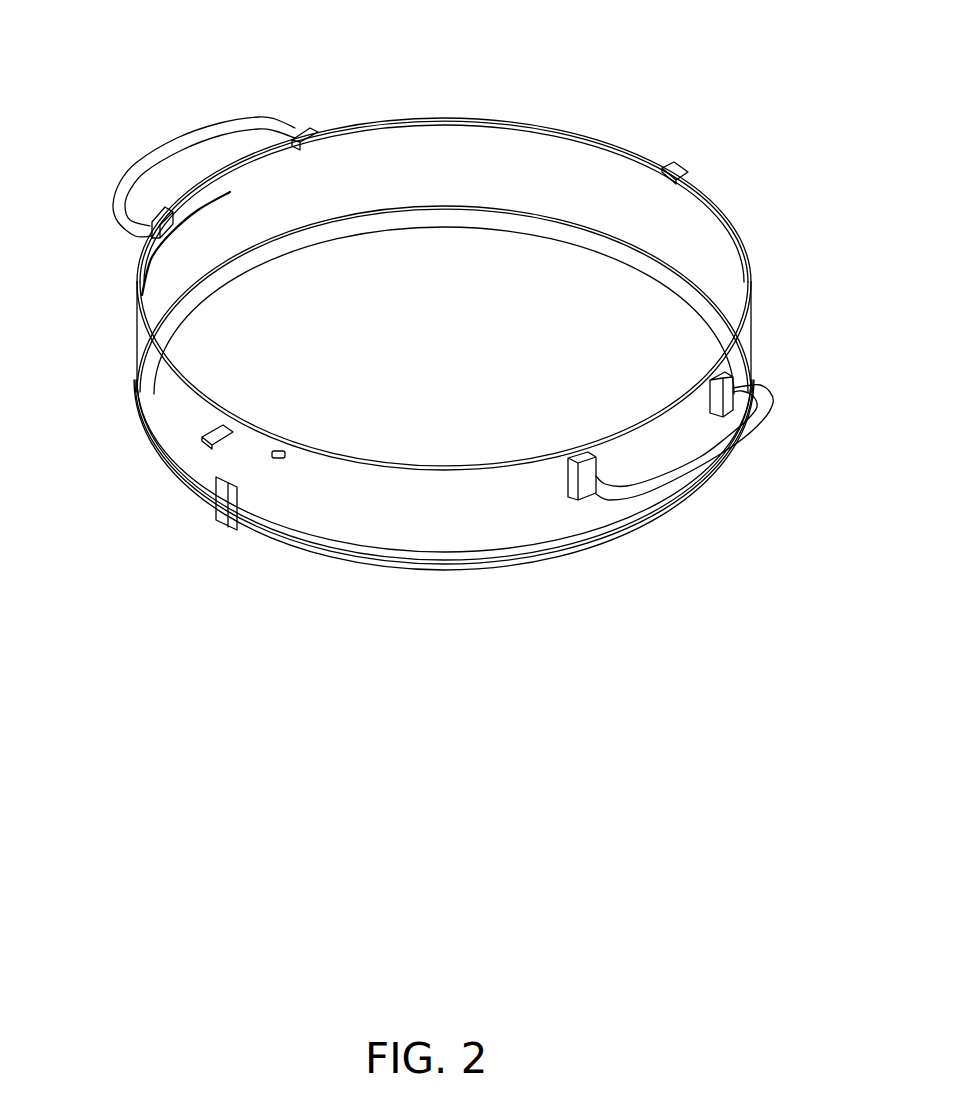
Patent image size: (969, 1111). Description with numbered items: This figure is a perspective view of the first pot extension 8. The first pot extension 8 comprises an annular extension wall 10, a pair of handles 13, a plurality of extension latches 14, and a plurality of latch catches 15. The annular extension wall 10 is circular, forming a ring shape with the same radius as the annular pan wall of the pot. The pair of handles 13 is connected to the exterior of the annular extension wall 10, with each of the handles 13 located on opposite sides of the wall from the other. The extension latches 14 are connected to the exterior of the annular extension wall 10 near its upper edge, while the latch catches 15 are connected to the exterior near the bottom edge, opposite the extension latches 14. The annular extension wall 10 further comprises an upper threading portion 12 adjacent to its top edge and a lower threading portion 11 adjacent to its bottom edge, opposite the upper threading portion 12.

The first pot extension 8 is at (420, 396).
The annular extension wall 10 is at (475, 162).
The lower threading portion 11 is at (317, 550).
The upper threading portion 12 is at (362, 127).
The handle 13 is at (223, 132).
The extension latch 14 is at (663, 165).
The latch catch 15 is at (223, 517).